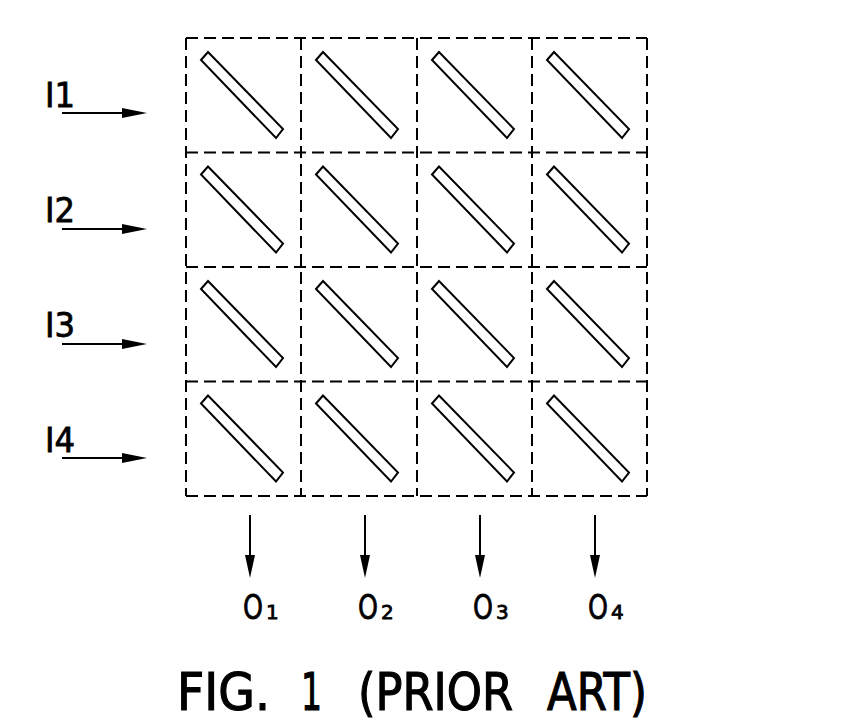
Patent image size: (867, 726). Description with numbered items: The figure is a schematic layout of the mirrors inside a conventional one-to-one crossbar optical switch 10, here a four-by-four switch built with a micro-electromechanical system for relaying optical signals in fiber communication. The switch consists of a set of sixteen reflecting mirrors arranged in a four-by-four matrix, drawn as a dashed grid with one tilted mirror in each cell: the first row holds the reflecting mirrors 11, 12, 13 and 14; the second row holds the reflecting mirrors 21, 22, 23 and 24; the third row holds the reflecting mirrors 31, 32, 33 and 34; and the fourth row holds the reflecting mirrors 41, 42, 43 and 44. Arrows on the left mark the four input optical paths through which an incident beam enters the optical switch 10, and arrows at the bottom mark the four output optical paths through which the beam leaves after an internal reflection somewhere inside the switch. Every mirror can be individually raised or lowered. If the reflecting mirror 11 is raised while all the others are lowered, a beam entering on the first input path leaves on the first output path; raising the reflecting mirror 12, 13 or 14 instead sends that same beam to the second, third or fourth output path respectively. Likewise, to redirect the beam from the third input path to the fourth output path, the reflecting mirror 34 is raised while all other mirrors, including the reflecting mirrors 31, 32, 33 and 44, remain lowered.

The optical switch 10 is at (693, 98).
The reflecting mirror S11 11 is at (242, 101).
The reflecting mirror S12 12 is at (357, 101).
The reflecting mirror S13 13 is at (473, 101).
The reflecting mirror S14 14 is at (588, 101).
The reflecting mirror S21 21 is at (242, 216).
The reflecting mirror S22 22 is at (357, 216).
The reflecting mirror S23 23 is at (473, 216).
The reflecting mirror S24 24 is at (588, 216).
The reflecting mirror S31 31 is at (242, 330).
The reflecting mirror S32 32 is at (357, 330).
The reflecting mirror S33 33 is at (473, 330).
The reflecting mirror S34 34 is at (588, 330).
The reflecting mirror S41 41 is at (242, 445).
The reflecting mirror S42 42 is at (357, 445).
The reflecting mirror S43 43 is at (473, 445).
The reflecting mirror S44 44 is at (588, 445).